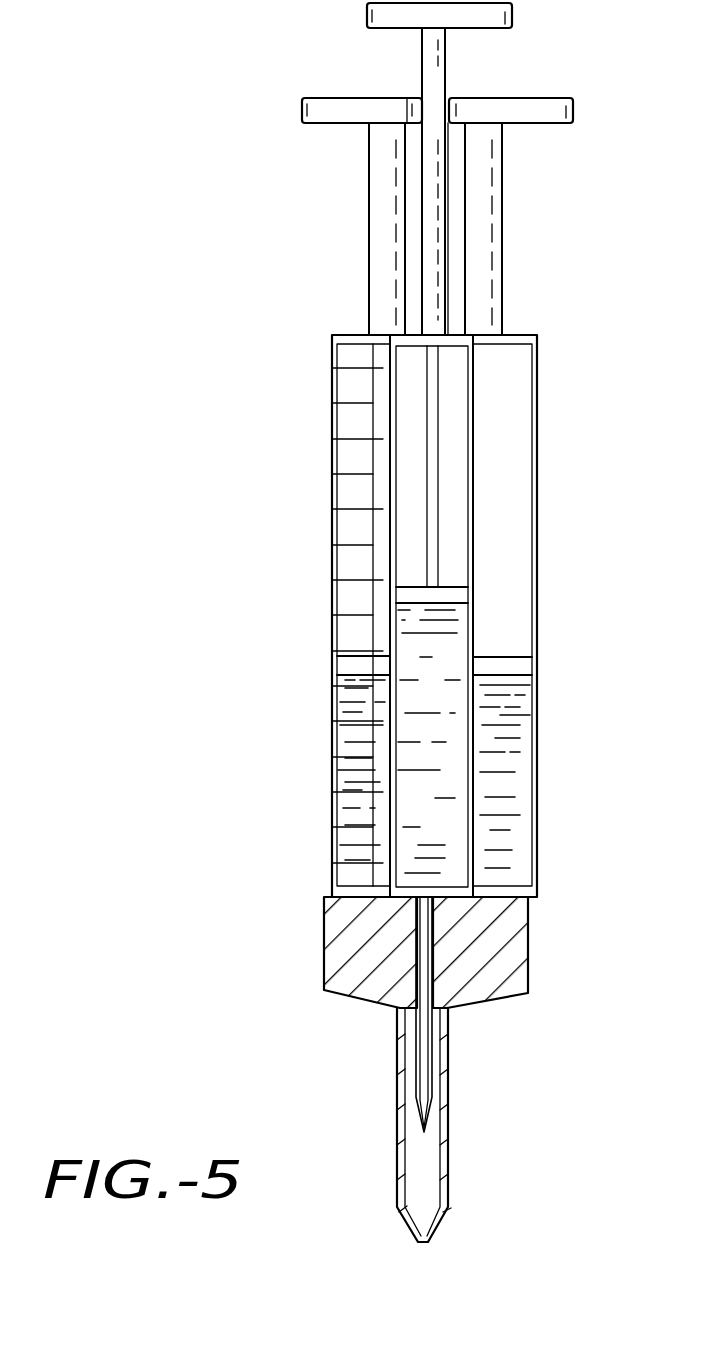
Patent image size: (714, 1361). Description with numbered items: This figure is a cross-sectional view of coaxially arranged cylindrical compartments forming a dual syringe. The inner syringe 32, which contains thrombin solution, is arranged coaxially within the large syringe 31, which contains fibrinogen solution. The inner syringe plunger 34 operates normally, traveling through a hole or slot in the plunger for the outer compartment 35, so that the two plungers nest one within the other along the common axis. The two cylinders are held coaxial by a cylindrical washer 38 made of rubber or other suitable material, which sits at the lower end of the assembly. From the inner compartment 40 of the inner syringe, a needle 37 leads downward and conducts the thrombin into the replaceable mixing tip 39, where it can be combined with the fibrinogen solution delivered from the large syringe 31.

The large syringe 31 is at (545, 411).
The inner syringe 32 is at (473, 488).
The inner syringe plunger 34 is at (465, 72).
The plunger for the outer compartment 35 is at (512, 217).
The needle 37 is at (440, 953).
The cylindrical washer 38 is at (515, 1010).
The replaceable mixing tip 39 is at (455, 1121).
The inner compartment 40 is at (440, 767).